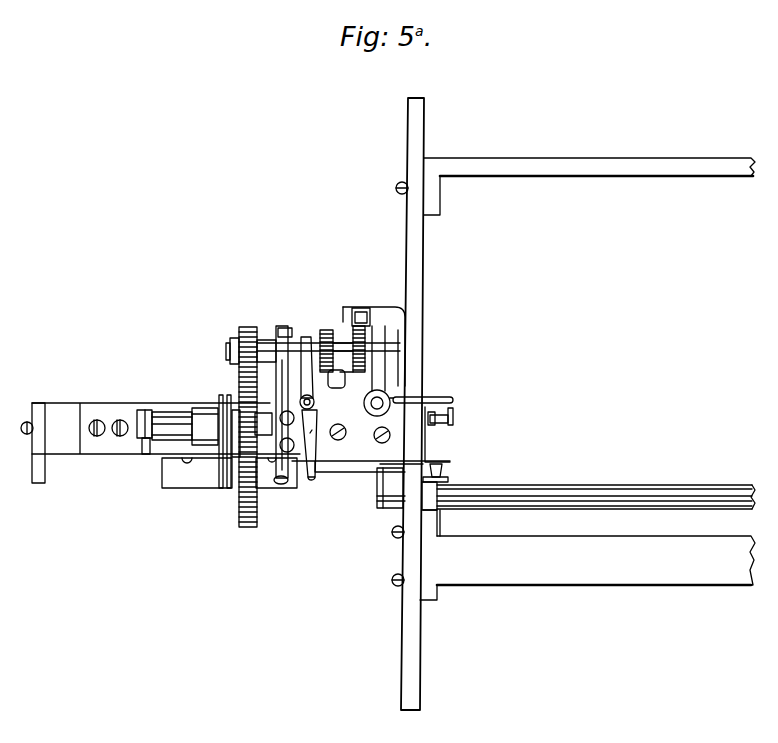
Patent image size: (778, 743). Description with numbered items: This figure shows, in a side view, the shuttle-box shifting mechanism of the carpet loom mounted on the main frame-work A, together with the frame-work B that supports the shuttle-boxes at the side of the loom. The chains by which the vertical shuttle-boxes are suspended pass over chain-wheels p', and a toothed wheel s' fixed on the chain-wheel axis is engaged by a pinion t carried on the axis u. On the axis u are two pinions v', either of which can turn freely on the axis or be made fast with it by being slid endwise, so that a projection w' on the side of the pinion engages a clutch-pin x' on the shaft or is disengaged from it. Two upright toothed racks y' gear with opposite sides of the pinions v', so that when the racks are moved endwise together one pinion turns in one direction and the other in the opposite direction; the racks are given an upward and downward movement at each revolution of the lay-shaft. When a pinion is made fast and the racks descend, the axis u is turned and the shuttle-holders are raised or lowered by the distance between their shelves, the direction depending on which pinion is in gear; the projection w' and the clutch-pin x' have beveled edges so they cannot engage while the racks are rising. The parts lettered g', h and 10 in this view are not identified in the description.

The main frame-work A is at (573, 404).
The frame-work supporting the shuttle-boxes B is at (160, 443).
The shaft and block g' is at (224, 450).
The pivot h is at (377, 403).
The chain-wheels p' is at (205, 426).
The toothed wheel s' is at (228, 441).
The pinion t is at (251, 418).
The axis u is at (287, 420).
The pinions v' is at (327, 343).
The projection w' is at (343, 356).
The clutch-pin x' is at (351, 349).
The toothed racks y' is at (349, 348).
The detail 10 is at (346, 375).